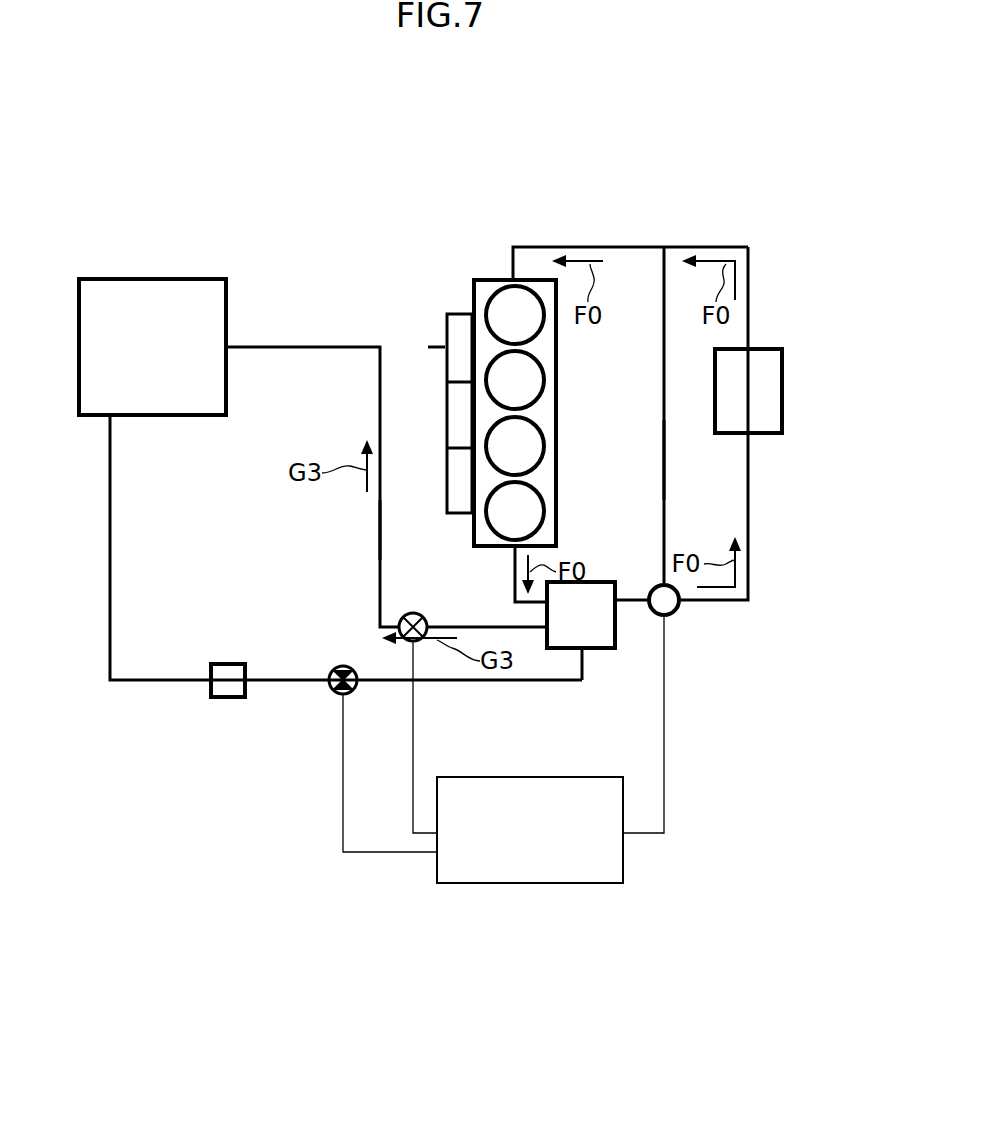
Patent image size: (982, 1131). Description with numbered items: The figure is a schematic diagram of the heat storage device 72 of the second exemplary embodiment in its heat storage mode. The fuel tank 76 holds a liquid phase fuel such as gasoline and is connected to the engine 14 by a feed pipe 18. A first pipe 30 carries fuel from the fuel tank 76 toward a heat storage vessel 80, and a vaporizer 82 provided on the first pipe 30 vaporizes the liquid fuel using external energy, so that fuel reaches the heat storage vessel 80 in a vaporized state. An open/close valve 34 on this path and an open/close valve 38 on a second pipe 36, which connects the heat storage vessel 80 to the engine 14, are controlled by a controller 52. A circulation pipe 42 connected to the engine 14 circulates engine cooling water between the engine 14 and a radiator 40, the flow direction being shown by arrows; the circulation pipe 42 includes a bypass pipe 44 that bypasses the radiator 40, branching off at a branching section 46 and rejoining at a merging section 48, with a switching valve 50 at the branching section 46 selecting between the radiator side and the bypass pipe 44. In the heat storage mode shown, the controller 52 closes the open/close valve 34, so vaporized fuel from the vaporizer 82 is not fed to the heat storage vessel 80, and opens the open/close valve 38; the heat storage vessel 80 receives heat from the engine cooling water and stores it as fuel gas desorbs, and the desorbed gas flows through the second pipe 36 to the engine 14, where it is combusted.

The engine 14 is at (478, 272).
The feed pipe 18 is at (306, 346).
The first pipe 30 is at (110, 630).
The open/close valve 34 is at (343, 664).
The second pipe 36 is at (380, 516).
The open/close valve 38 is at (414, 612).
The radiator 40 is at (786, 390).
The circulation pipe 42 is at (750, 286).
The bypass pipe 44 is at (664, 452).
The branching section 46 is at (662, 583).
The merging section 48 is at (664, 246).
The switching valve 50 is at (676, 612).
The controller 52 is at (530, 885).
The heat storage device 72 is at (624, 185).
The fuel tank 76 is at (153, 272).
The heat storage vessel 80 is at (598, 576).
The vaporizer 82 is at (228, 662).